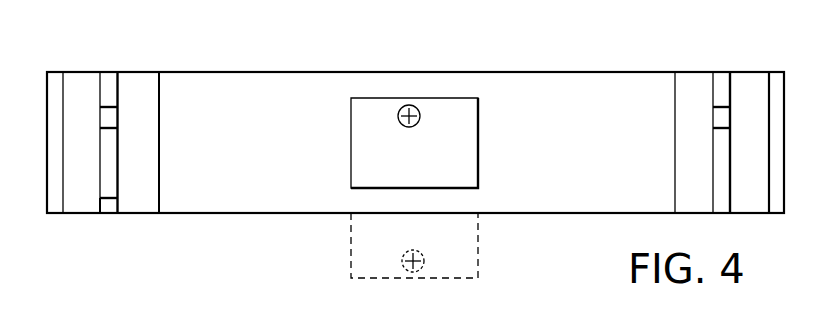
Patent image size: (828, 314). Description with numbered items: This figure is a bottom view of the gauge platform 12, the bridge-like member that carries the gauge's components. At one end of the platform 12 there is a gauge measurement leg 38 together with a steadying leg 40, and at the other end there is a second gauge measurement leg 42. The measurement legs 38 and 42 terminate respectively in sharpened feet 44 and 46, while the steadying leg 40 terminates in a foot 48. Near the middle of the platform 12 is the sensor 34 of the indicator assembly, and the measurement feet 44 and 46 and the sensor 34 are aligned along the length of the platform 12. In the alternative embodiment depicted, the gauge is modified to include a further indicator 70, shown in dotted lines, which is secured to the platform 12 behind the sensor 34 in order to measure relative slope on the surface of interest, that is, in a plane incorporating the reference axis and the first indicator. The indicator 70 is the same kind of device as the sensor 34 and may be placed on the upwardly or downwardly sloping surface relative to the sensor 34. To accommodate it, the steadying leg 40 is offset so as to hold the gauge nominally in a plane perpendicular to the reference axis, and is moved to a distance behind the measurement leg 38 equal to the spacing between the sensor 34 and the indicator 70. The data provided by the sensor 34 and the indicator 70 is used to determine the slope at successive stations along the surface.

The platform 12 is at (559, 152).
The sensor 34 is at (412, 103).
The gauge measurement leg 38 is at (98, 103).
The steadying leg 40 is at (98, 204).
The gauge measurement leg 42 is at (732, 115).
The sharpened foot 44 is at (119, 112).
The sharpened foot 46 is at (712, 115).
The foot 48 is at (120, 202).
The indicator 70 is at (427, 260).